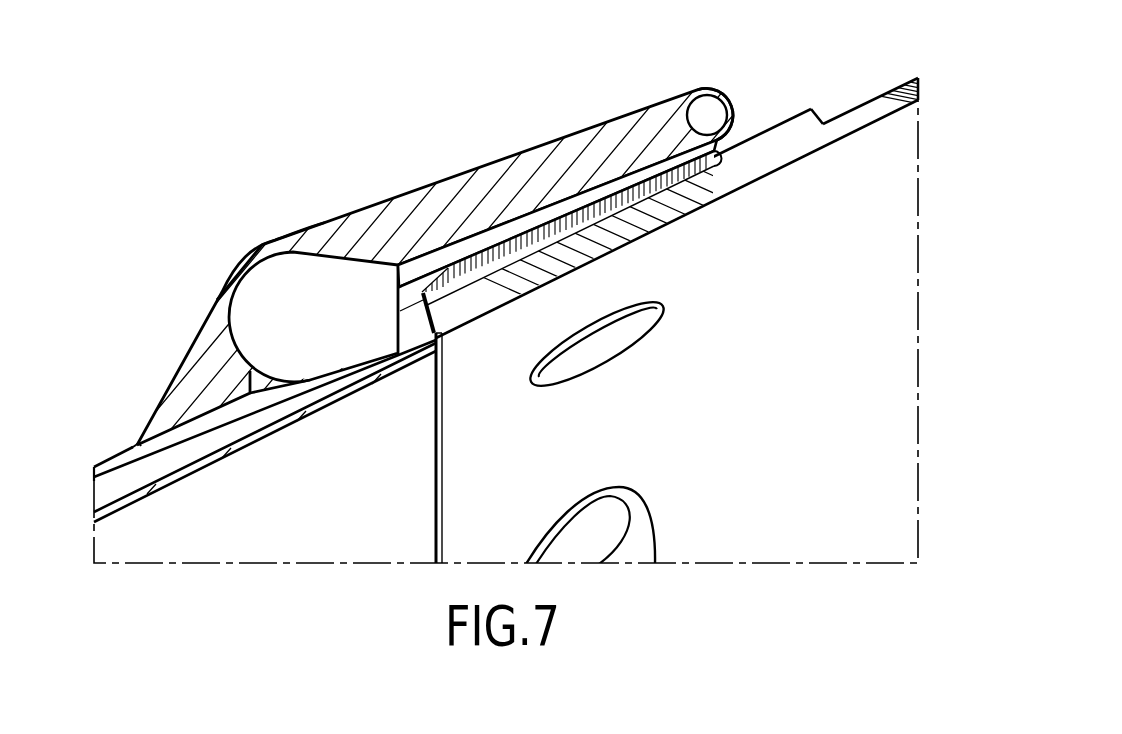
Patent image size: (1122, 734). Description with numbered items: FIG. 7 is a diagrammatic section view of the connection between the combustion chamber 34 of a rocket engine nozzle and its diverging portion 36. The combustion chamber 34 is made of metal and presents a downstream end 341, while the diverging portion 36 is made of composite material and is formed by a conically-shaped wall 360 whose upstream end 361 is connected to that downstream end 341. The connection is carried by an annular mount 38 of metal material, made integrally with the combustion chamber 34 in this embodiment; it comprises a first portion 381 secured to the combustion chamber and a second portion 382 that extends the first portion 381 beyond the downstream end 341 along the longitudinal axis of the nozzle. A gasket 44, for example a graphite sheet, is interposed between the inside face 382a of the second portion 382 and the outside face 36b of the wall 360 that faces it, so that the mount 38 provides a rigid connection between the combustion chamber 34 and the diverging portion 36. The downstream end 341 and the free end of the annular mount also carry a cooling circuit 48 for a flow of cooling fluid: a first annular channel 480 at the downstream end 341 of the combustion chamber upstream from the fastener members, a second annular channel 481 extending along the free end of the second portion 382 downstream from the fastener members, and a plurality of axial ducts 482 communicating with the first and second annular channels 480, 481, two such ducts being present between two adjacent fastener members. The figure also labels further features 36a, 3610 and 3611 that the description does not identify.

The combustion chamber 34 is at (234, 431).
The downstream end of the combustion chamber 341 is at (131, 450).
The diverging portion 36 is at (561, 180).
The lower face of upper plate 36a is at (790, 162).
The outside face of the wall 36b is at (797, 116).
The conically-shaped wall 360 is at (783, 142).
The upstream end of the diverging portion 361 is at (700, 199).
The ring 3610 is at (615, 355).
The ring inner edge 3611 is at (634, 322).
The annular mount 38 is at (434, 265).
The first portion of the annular mount 381 is at (190, 340).
The second portion of the annular mount 382 is at (590, 266).
The inside face of the second portion 382a is at (615, 197).
The gasket 44 is at (721, 154).
The cooling circuit 48 is at (434, 265).
The first annular channel 480 is at (287, 293).
The second annular channel 481 is at (704, 118).
The axial ducts 482 is at (450, 247).